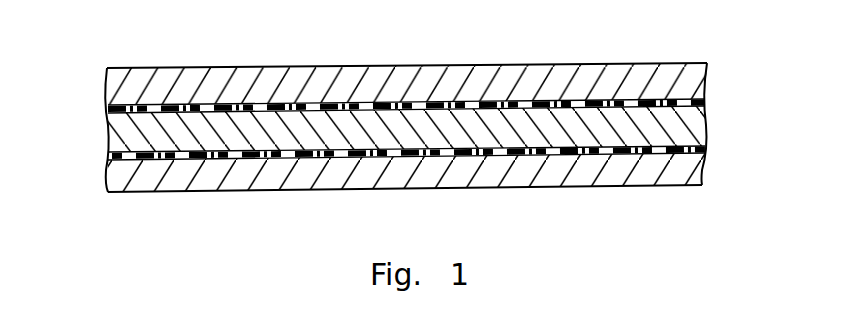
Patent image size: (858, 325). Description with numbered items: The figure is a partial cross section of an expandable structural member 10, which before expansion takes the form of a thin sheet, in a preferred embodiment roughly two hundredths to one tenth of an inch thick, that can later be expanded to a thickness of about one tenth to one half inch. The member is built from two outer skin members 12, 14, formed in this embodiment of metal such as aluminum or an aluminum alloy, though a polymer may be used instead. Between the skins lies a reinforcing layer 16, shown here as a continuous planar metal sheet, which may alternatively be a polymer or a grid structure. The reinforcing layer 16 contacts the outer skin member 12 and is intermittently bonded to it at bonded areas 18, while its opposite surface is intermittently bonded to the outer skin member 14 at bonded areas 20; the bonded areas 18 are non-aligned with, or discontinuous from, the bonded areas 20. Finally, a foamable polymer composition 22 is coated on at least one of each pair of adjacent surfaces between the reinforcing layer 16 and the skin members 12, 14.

The expandable structural member 10 is at (752, 119).
The outer skin member 12 is at (698, 75).
The outer skin member 14 is at (688, 167).
The reinforcing layer 16 is at (122, 135).
The bonded areas 18 is at (183, 108).
The bonded areas 20 is at (420, 157).
The foamable polymer composition 22 is at (138, 108).